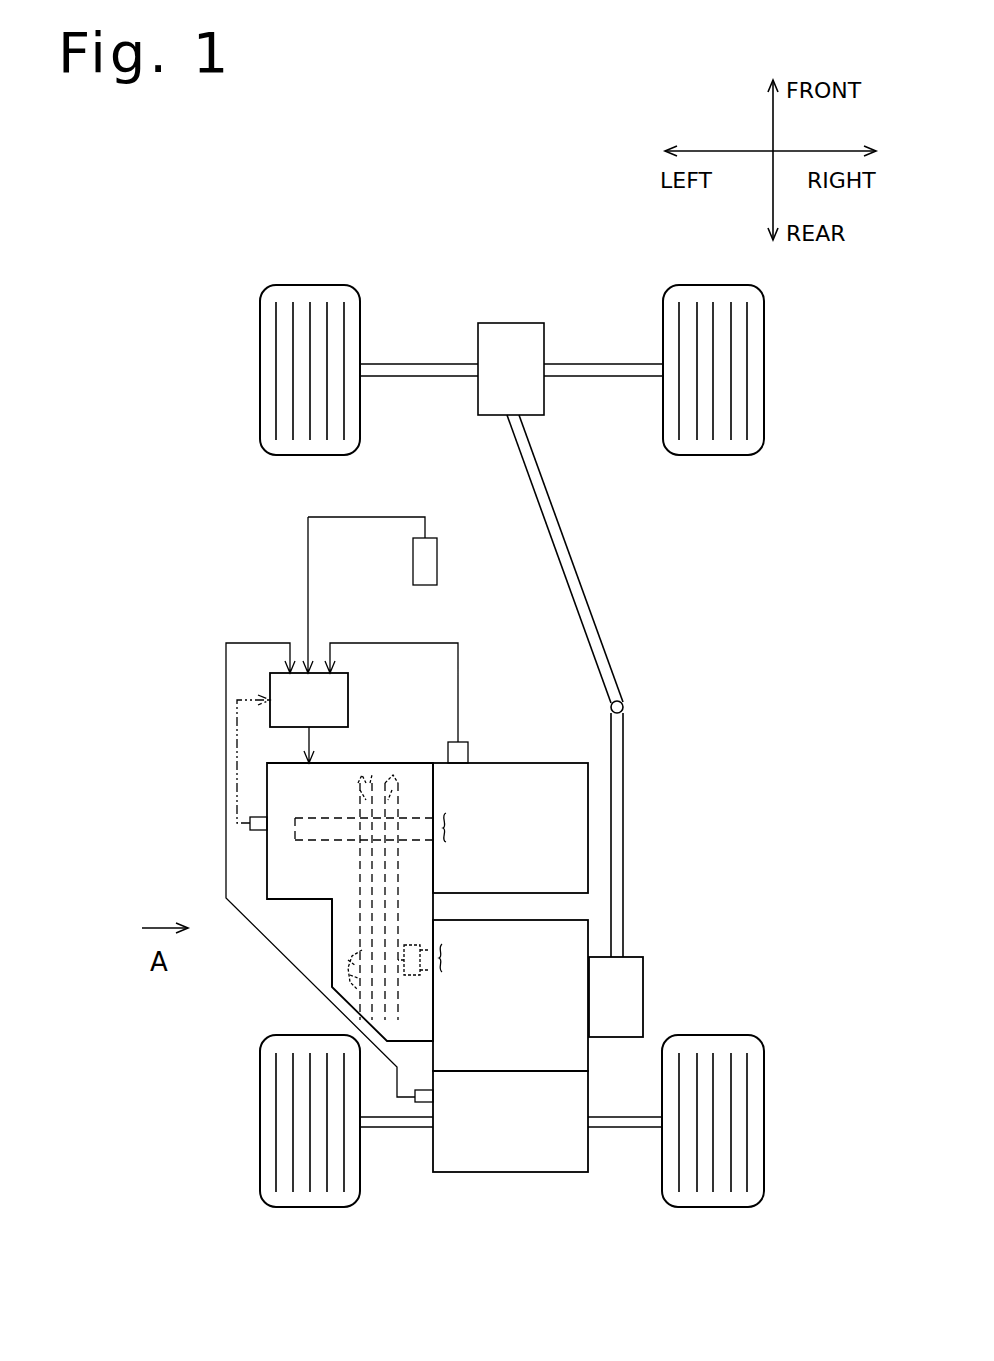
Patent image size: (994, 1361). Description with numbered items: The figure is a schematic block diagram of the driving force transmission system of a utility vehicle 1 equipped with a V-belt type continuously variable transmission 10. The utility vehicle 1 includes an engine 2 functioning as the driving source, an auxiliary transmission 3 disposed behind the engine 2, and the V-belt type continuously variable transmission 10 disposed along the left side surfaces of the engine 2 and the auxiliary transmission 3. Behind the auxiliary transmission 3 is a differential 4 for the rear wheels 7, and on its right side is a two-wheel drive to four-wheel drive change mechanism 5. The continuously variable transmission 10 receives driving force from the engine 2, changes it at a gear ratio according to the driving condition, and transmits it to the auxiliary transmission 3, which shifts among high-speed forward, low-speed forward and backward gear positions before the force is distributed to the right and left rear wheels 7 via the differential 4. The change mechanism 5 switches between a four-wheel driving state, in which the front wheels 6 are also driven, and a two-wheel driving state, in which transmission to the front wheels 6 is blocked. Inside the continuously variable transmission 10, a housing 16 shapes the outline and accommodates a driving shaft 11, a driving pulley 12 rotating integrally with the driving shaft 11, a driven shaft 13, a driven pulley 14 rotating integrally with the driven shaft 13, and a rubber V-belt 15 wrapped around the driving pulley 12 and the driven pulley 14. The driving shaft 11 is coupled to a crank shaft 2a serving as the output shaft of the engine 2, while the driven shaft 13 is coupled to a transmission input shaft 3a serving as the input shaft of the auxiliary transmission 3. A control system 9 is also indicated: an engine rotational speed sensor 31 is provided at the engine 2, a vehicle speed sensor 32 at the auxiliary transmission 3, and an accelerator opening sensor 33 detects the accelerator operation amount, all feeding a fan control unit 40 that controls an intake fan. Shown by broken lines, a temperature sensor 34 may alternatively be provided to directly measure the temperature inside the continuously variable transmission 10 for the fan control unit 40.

The utility vehicle 1 is at (228, 530).
The engine 2 is at (522, 848).
The crank shaft 2a is at (446, 814).
The auxiliary transmission 3 is at (522, 1015).
The transmission input shaft 3a is at (444, 946).
The differential 4 is at (522, 1141).
The two-wheel drive to four-wheel drive change mechanism 5 is at (643, 994).
The front wheels 6 is at (310, 285).
The rear wheels 7 is at (262, 1196).
The control system 9 is at (182, 609).
The V-belt type continuously variable transmission 10 is at (372, 752).
The driving shaft 11 is at (336, 816).
The driving pulley 12 is at (362, 868).
The driven shaft 13 is at (352, 958).
The driven pulley 14 is at (392, 996).
The V-belt 15 is at (388, 880).
The housing 16 is at (331, 937).
The engine rotational speed sensor 31 is at (466, 745).
The vehicle speed sensor 32 is at (425, 1103).
The accelerator opening sensor 33 is at (430, 560).
The temperature sensor 34 is at (257, 832).
The fan control unit 40 is at (325, 716).